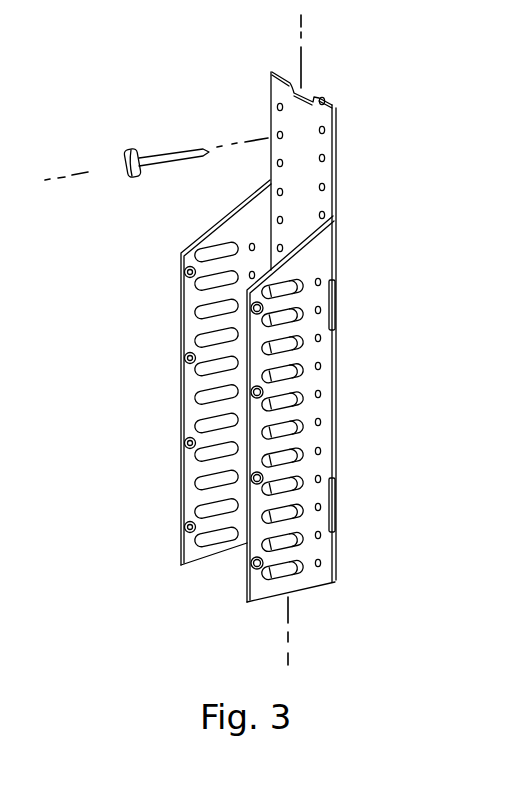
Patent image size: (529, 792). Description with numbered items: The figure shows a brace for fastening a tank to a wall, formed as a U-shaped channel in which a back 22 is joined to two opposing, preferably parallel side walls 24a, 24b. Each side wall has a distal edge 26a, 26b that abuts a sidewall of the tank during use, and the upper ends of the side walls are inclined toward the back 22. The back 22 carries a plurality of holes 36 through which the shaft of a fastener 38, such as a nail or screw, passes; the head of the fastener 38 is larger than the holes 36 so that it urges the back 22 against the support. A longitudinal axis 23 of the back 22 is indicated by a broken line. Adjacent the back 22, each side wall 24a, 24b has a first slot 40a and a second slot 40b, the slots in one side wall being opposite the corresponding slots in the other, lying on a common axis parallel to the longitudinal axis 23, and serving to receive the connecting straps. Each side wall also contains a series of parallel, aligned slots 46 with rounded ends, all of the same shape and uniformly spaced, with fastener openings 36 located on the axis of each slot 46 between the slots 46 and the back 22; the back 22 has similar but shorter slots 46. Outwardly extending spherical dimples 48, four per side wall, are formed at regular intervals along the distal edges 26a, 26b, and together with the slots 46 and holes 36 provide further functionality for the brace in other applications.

The back 22 is at (326, 112).
The longitudinal axis 23 is at (303, 66).
The side wall 24a is at (312, 580).
The side wall 24b is at (218, 547).
The distal edge 26a is at (245, 587).
The distal edge 26b is at (181, 467).
The holes 36 is at (283, 163).
The fastener 38 is at (157, 150).
The first slot 40a is at (336, 297).
The second slot 40b is at (333, 519).
The slots 46 is at (205, 398).
The dimples 48 is at (188, 278).